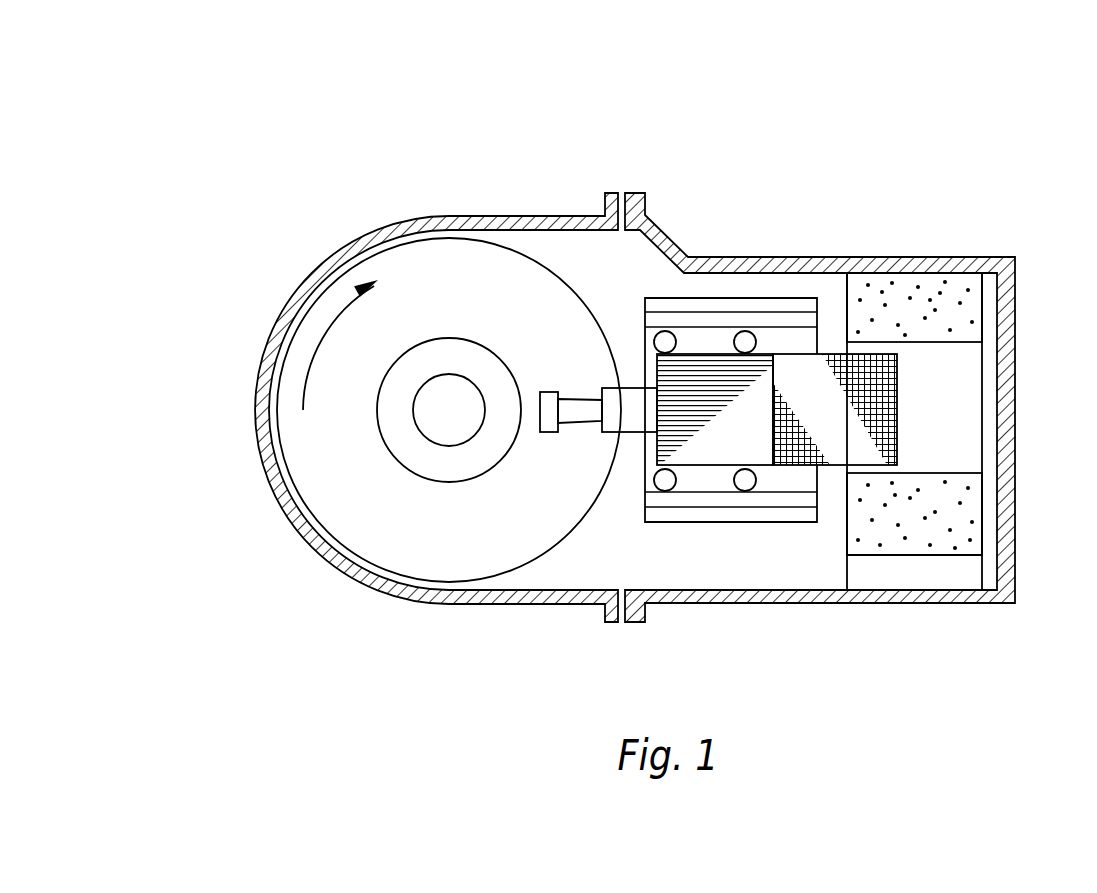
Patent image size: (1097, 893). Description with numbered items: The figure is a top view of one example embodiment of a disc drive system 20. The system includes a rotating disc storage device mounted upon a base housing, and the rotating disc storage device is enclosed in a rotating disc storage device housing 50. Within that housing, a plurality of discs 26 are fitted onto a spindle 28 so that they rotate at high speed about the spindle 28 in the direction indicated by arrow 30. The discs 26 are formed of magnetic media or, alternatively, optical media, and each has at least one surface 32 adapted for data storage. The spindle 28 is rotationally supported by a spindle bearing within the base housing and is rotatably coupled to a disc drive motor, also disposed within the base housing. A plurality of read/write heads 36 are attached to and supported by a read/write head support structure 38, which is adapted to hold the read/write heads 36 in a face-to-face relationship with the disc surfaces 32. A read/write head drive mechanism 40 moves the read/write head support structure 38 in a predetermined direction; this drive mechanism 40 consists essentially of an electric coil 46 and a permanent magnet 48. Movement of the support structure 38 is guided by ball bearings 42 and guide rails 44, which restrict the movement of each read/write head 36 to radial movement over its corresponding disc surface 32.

The disc drive system 20 is at (296, 111).
The discs 26 is at (313, 548).
The spindle 28 is at (442, 420).
The arrow 30 is at (315, 355).
The disc surface 32 is at (459, 544).
The read/write heads 36 is at (550, 433).
The read/write head support structure 38 is at (583, 410).
The read/write head drive mechanism 40 is at (703, 353).
The ball bearings 42 is at (745, 342).
The guide rails 44 is at (800, 318).
The electric coil 46 is at (897, 373).
The permanent magnet 48 is at (957, 503).
The rotating disc storage device housing 50 is at (343, 238).